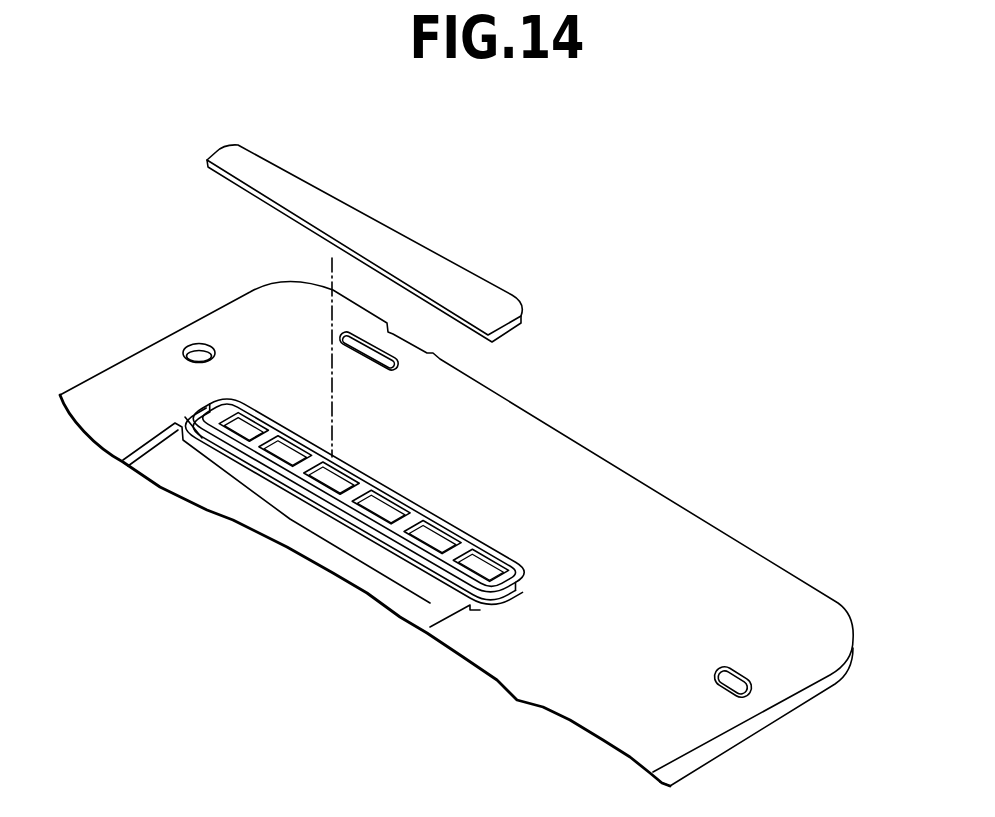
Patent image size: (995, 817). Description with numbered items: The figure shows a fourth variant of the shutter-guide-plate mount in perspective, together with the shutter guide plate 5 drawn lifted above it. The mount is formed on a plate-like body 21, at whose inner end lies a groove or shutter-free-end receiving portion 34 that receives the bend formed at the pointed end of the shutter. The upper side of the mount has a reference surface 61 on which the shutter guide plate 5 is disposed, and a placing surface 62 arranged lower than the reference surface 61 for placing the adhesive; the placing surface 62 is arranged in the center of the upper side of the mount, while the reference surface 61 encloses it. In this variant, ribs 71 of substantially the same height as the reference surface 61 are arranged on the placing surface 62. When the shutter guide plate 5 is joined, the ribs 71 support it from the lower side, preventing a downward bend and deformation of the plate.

The shutter guide plate 5 is at (380, 215).
The mounting plate 21 is at (753, 548).
The shutter-free-end receiving portion 34 is at (182, 418).
The reference surface 61 is at (225, 398).
The placing surface 62 is at (293, 420).
The ribs 71 is at (268, 413).